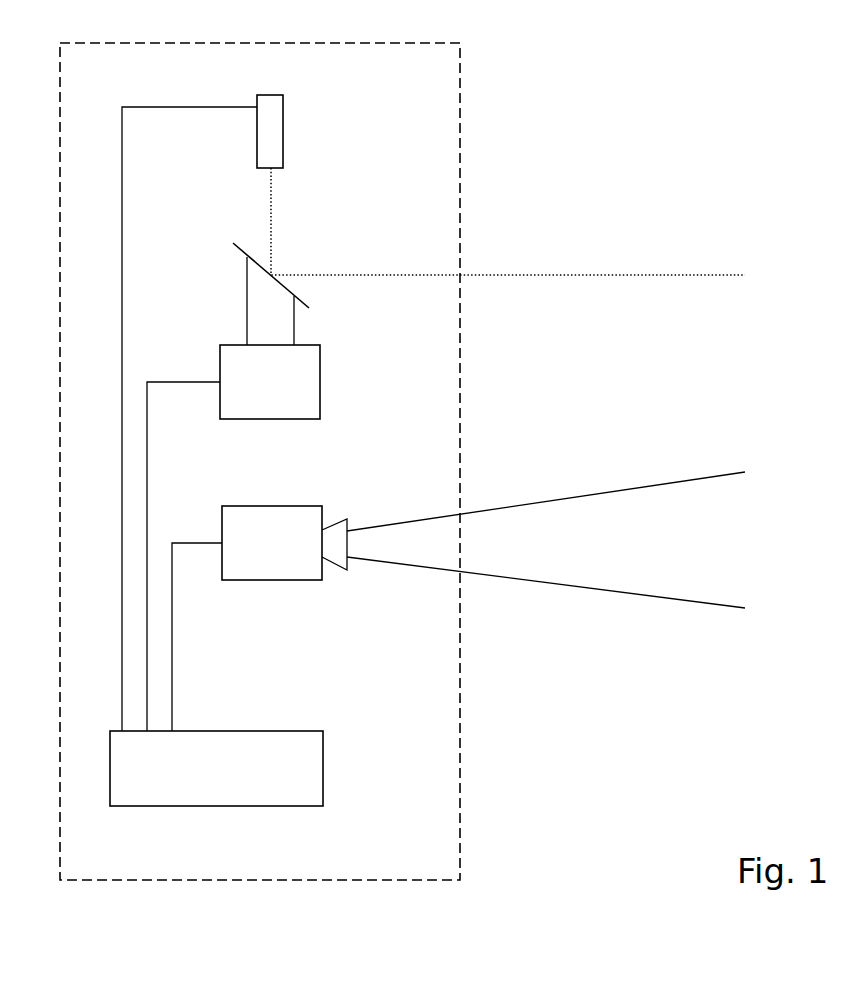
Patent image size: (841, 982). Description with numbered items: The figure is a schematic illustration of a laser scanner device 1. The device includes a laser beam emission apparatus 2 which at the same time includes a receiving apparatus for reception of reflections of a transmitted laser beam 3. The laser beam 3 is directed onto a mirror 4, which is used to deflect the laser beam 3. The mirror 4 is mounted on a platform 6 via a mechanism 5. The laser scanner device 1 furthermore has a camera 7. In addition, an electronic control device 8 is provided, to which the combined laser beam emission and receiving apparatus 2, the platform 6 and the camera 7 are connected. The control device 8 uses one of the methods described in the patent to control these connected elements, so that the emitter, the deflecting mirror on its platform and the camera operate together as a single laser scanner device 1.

The laser scanner device 1 is at (460, 744).
The laser beam emission apparatus 2 is at (270, 131).
The laser beam 3 is at (271, 220).
The mirror 4 is at (282, 285).
The mechanism 5 is at (294, 332).
The platform 6 is at (270, 382).
The camera 7 is at (483, 540).
The electronic control device 8 is at (216, 768).